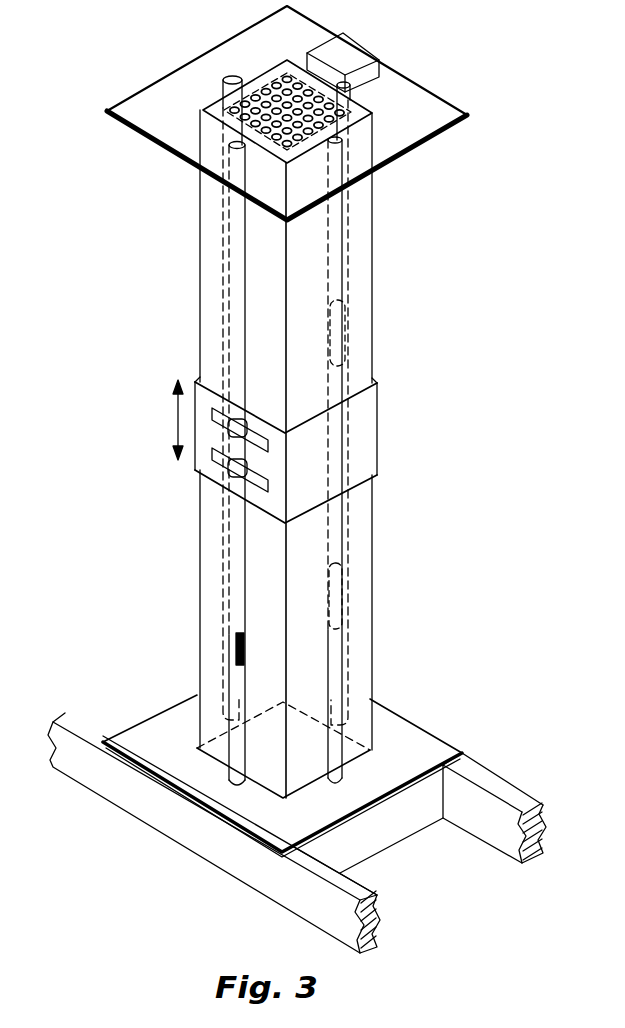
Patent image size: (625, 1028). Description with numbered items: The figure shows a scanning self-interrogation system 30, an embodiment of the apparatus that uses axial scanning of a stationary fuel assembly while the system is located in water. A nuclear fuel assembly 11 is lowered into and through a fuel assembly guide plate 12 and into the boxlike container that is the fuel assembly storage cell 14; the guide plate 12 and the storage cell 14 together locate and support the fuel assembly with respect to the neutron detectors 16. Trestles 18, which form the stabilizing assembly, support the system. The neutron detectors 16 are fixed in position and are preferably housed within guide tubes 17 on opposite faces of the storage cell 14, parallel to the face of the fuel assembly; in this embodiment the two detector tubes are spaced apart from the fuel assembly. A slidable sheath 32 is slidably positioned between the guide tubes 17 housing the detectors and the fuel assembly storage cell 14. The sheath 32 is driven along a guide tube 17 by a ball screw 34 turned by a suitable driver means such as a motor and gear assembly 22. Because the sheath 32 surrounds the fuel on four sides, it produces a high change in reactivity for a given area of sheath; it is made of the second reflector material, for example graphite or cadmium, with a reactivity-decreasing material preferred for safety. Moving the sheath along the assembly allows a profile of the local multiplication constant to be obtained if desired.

The nuclear fuel assembly 11 is at (347, 122).
The fuel assembly guide plate 12 is at (140, 93).
The fuel assembly storage cell 14 is at (372, 351).
The neutron detectors 16 is at (338, 594).
The guide tubes 17 is at (223, 80).
The trestles 18 is at (138, 832).
The motor and gear assembly 22 is at (353, 52).
The scanning self-interrogation system 30 is at (452, 428).
The slidable sheath 32 is at (203, 467).
The ball screw 34 is at (347, 97).